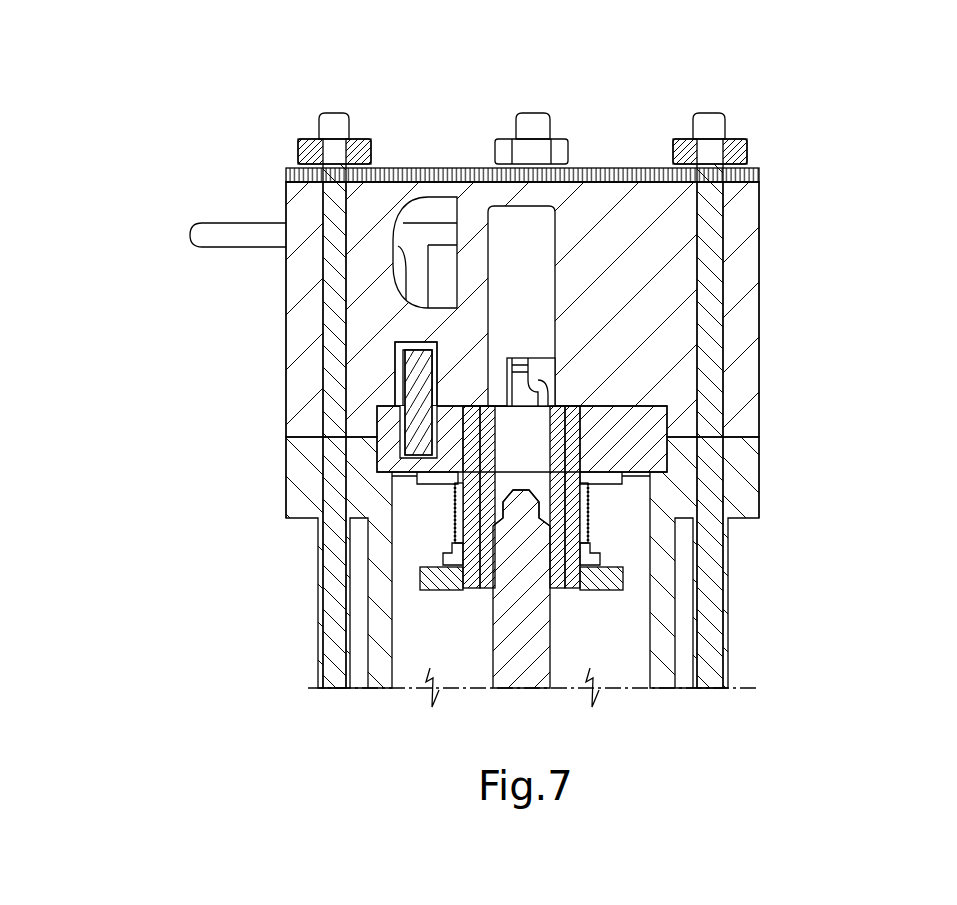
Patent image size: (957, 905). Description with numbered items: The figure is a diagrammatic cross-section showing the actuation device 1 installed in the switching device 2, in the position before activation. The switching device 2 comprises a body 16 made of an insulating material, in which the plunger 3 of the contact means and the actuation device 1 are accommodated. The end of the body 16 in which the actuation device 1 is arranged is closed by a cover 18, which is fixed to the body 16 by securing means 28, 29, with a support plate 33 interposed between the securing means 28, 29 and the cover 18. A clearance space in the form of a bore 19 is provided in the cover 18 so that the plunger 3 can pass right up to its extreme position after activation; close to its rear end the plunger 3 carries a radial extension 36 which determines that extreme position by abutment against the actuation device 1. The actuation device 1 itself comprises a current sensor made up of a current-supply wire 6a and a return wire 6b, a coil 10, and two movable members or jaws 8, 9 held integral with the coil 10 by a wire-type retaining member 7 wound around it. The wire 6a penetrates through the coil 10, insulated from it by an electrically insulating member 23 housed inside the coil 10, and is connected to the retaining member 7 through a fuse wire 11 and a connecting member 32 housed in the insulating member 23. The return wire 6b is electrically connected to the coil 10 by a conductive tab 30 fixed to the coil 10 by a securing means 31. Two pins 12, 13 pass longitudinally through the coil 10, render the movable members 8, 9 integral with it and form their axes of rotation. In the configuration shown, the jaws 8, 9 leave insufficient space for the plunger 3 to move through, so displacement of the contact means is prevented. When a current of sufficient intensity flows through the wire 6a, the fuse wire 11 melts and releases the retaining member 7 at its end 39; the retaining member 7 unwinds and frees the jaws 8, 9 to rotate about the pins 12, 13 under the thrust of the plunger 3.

The actuation device 1 is at (616, 636).
The switching device 2 is at (160, 367).
The plunger 3 is at (510, 665).
The current-supply wire 6a is at (238, 235).
The return wire 6b is at (433, 232).
The retaining member 7 is at (458, 520).
The movable member 8 is at (457, 592).
The movable member 9 is at (592, 553).
The coil 10 is at (650, 423).
The fuse wire 11 is at (462, 490).
The pin 12 is at (590, 514).
The pin 13 is at (423, 428).
The body 16 is at (748, 483).
The cover 18 is at (740, 267).
The bore 19 is at (525, 248).
The electrically insulating member 23 is at (418, 382).
The securing means 28 is at (290, 95).
The securing means 29 is at (745, 93).
The conductive tab 30 is at (545, 383).
The securing means 31 is at (555, 362).
The connecting member 32 is at (398, 355).
The support plate 33 is at (610, 170).
The radial extension 36 is at (584, 104).
The end of retaining member 39 is at (433, 478).